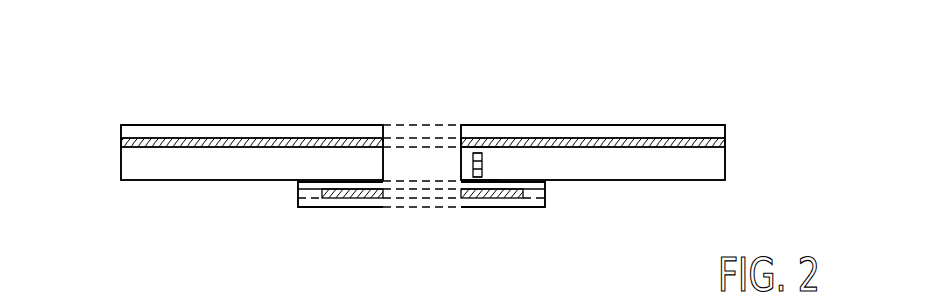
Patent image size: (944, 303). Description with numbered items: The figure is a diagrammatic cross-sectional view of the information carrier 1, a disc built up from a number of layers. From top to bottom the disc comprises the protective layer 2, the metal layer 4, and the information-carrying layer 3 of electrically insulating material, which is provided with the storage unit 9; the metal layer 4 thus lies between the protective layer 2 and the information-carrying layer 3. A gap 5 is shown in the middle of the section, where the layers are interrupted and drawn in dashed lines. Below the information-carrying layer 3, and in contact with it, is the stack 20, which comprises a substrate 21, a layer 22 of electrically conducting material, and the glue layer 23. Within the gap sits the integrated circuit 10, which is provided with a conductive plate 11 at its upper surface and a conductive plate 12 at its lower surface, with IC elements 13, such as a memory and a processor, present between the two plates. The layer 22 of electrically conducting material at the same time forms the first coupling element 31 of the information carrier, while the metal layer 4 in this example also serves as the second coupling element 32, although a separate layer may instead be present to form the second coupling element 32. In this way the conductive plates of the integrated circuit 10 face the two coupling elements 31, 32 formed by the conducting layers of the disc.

The information carrier 1 is at (230, 114).
The protective layer 2 is at (130, 133).
The information-carrying layer 3 is at (130, 173).
The metal layer 4 is at (130, 143).
The gap / cutout 5 is at (400, 150).
The storage unit 9 is at (195, 165).
The integrated circuit 10 is at (490, 158).
The conductive plate 11 is at (477, 153).
The conductive plate 12 is at (472, 171).
The IC elements 13 is at (473, 162).
The stack 20 is at (560, 182).
The substrate 21 is at (299, 208).
The layer of electrically conducting material 22 is at (298, 196).
The glue layer 23 is at (298, 184).
The first coupling element 31 is at (347, 209).
The second coupling element 32 is at (334, 134).